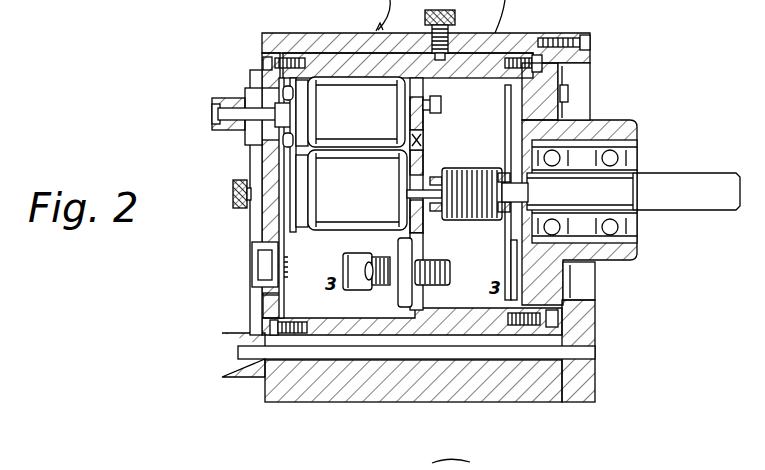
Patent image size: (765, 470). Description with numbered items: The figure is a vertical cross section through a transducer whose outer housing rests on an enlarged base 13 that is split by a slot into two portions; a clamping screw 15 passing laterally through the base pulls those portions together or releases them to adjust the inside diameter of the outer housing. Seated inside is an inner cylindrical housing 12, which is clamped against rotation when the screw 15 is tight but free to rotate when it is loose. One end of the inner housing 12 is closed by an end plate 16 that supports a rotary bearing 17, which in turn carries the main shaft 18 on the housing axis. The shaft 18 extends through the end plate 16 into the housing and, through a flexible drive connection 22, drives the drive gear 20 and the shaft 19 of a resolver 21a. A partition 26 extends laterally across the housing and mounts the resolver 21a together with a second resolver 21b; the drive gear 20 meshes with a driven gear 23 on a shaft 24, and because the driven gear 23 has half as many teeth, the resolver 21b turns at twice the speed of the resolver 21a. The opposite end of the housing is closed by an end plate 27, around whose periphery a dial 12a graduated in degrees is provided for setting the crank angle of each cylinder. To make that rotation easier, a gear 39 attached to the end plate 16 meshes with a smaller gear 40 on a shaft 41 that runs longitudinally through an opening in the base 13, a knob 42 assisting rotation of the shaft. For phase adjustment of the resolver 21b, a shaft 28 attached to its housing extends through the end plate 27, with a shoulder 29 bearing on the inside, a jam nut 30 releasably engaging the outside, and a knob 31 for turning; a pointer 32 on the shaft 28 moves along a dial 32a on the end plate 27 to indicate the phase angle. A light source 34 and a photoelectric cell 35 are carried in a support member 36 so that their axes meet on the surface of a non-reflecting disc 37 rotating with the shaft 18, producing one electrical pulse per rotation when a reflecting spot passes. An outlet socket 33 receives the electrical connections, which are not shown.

The inner cylindrical housing 12 is at (341, 52).
The dial 12a is at (263, 313).
The base 13 is at (357, 392).
The clamping screw 15 is at (154, 12).
The end plate 16 is at (543, 88).
The rotary bearing 17 is at (632, 144).
The shaft 18 is at (683, 200).
The shaft 19 is at (423, 192).
The drive gear 20 is at (428, 160).
The resolver 21a is at (378, 191).
The second resolver 21b is at (386, 128).
The flexible drive connection 22 is at (463, 220).
The driven gear 23 is at (425, 88).
The shaft 24 is at (432, 110).
The partition 26 is at (432, 147).
The end plate 27 is at (342, 250).
The shaft 28 is at (233, 100).
The shoulder 29 is at (286, 115).
The jam nut 30 is at (248, 88).
The knob 31 is at (213, 107).
The pointer 32 is at (250, 163).
The dial 32a is at (250, 222).
The outlet socket 33 is at (252, 268).
The light source 34 is at (368, 272).
The photoelectric cell 35 is at (338, 273).
The support member 36 is at (418, 297).
The disc 37 is at (506, 250).
The gear 39 is at (567, 268).
The gear 40 is at (578, 368).
The shaft 41 is at (588, 348).
The knob 42 is at (222, 350).